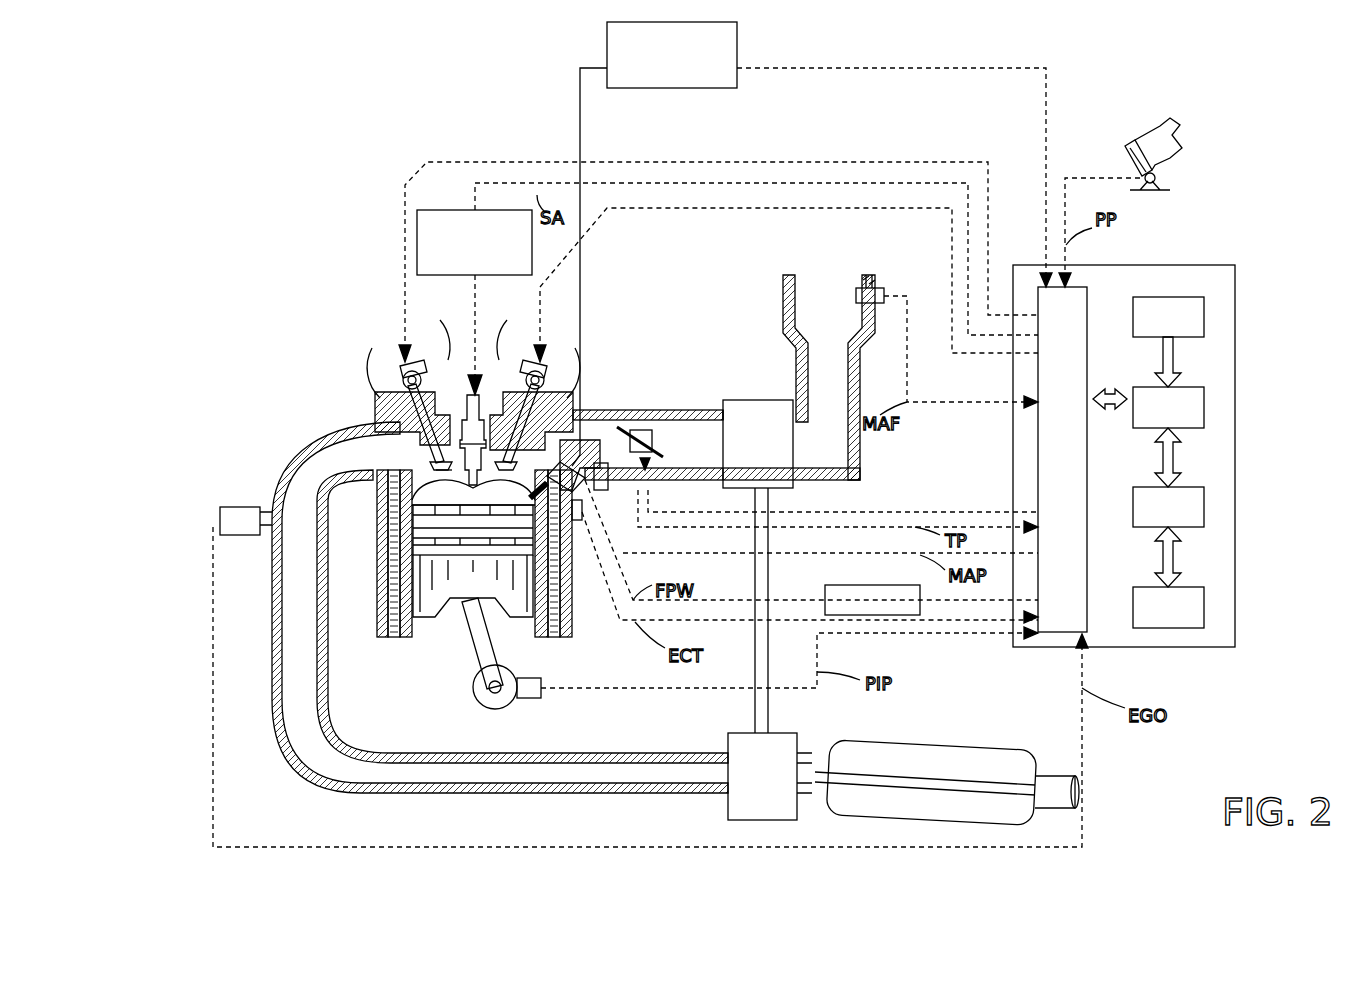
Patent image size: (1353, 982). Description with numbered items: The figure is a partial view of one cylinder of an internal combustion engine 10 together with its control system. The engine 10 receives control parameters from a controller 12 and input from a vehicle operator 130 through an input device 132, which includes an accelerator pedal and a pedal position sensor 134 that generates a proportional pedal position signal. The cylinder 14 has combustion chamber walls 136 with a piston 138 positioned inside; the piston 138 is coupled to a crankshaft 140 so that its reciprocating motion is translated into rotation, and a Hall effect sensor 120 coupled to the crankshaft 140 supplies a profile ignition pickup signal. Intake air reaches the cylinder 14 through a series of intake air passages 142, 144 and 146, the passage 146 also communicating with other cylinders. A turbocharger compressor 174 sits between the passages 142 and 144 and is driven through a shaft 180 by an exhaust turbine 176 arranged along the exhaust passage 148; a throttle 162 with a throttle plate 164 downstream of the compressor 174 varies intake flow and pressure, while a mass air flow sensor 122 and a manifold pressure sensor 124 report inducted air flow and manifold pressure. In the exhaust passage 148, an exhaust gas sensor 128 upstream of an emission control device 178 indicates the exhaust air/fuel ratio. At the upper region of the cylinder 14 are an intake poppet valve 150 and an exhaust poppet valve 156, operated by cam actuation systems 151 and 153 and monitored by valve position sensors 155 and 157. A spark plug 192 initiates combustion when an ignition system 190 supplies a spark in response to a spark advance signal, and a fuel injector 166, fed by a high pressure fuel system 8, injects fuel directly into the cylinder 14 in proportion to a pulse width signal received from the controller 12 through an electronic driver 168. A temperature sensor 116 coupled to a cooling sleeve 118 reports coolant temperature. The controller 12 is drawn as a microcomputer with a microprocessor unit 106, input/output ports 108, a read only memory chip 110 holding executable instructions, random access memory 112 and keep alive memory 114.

The internal combustion engine 10 is at (205, 97).
The high pressure fuel system 8 is at (737, 32).
The ignition system 190 is at (432, 210).
The cam actuation system 153 is at (418, 358).
The valve position sensor 155 is at (550, 372).
The cam actuation system 151 is at (520, 360).
The valve position sensor 157 is at (392, 372).
The exhaust poppet valve 156 is at (430, 462).
The spark plug 192 is at (466, 420).
The intake poppet valve 150 is at (505, 420).
The throttle plate 164 is at (620, 428).
The throttle 162 is at (640, 430).
The compressor 174 is at (745, 400).
The mass air flow sensor 122 is at (875, 288).
The intake air passage 142 is at (848, 316).
The intake air passage 146 is at (618, 453).
The intake air passage 144 is at (712, 453).
The exhaust passage 148 is at (366, 466).
The fuel injector 166 is at (784, 525).
The input device 132 is at (1128, 155).
The vehicle operator 130 is at (1182, 140).
The pedal position sensor 134 is at (1160, 176).
The input/output ports 108 is at (1088, 295).
The controller 12 is at (1236, 266).
The read only memory chip 110 is at (1205, 312).
The microprocessor unit 106 is at (1205, 405).
The random access memory 112 is at (1205, 510).
The keep alive memory 114 is at (1205, 612).
The cylinder 14 is at (380, 512).
The exhaust gas sensor 128 is at (220, 512).
The manifold pressure sensor 124 is at (603, 492).
The electronic driver 168 is at (828, 590).
The combustion chamber walls 136 is at (418, 640).
The piston 138 is at (456, 603).
The crankshaft 140 is at (480, 705).
The Hall effect sensor 120 is at (530, 700).
The cooling sleeve 118 is at (560, 625).
The temperature sensor 116 is at (585, 520).
The shaft 180 is at (770, 695).
The emission control device 178 is at (990, 755).
The exhaust turbine 176 is at (728, 800).